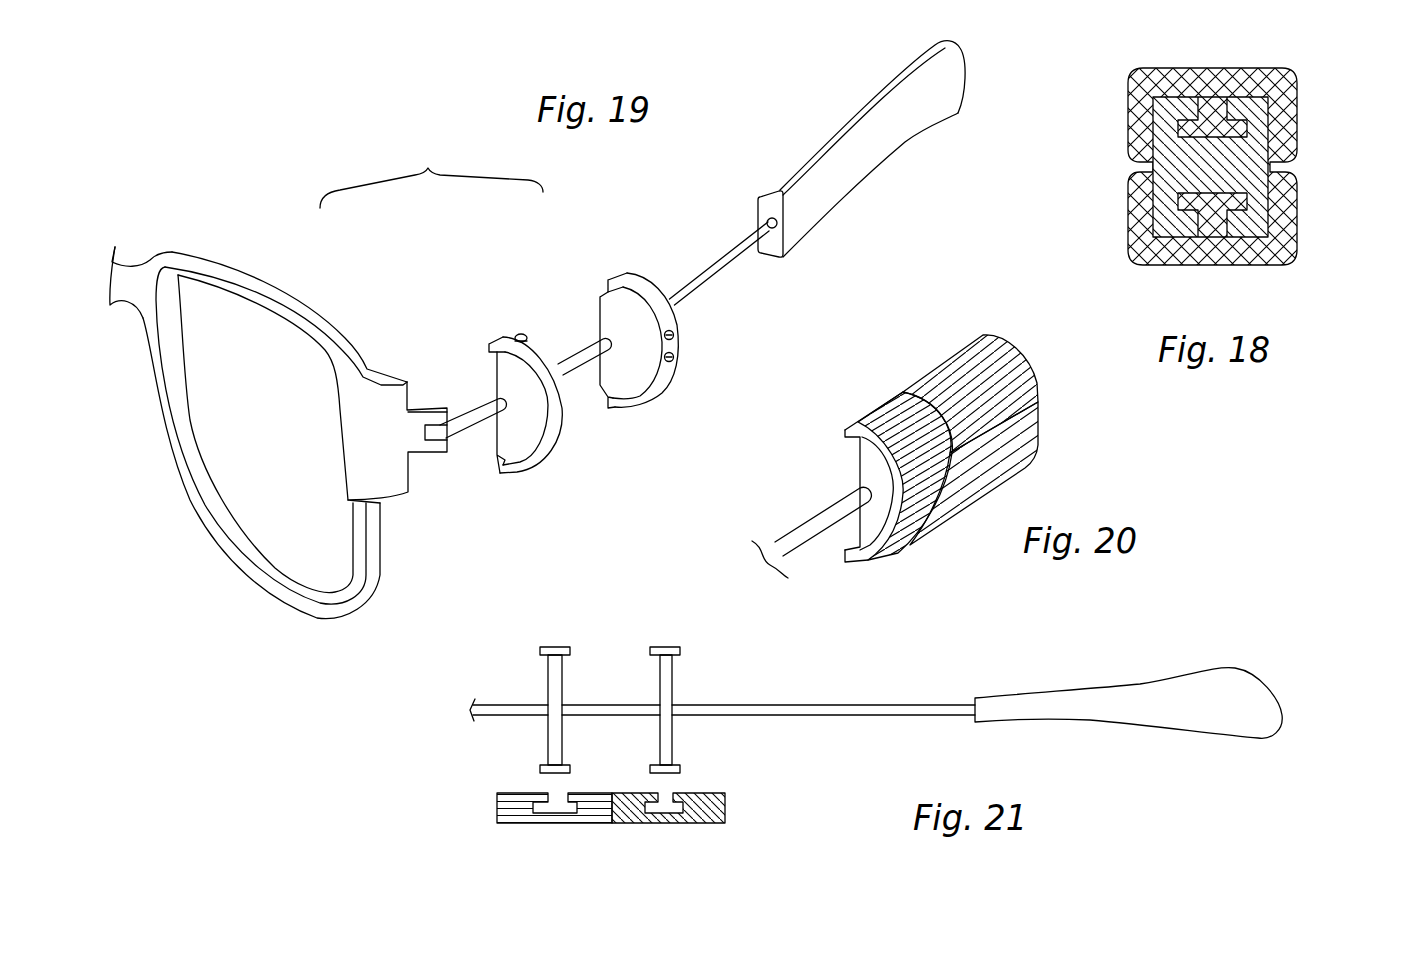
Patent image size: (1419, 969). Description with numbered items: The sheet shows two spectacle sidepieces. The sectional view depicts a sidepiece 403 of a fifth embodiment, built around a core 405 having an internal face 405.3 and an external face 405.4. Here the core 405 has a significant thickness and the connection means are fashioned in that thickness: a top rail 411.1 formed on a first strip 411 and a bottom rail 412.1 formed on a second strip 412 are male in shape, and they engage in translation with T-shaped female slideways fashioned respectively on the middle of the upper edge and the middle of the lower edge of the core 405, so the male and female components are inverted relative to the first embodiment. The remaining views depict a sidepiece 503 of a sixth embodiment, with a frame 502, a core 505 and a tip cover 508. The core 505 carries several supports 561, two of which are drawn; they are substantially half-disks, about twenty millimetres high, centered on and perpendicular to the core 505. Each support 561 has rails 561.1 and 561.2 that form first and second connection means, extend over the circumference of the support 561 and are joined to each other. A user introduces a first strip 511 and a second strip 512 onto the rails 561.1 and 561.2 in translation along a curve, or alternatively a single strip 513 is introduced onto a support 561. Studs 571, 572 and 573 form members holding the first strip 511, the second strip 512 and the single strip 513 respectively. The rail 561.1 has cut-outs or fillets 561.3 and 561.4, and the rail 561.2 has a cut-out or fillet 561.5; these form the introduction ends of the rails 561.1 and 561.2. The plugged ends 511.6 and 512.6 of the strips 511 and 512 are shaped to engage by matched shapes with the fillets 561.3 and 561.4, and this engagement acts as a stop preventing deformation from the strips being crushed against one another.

In FIG. 18, the sidepiece 403 is at (1297, 285).
In FIG. 18, the core 405 is at (1213, 170).
In FIG. 18, the internal face 405.3 is at (1140, 205).
In FIG. 18, the external face 405.4 is at (1289, 112).
In FIG. 18, the first strip 411 is at (1193, 87).
In FIG. 18, the top rail 411.1 is at (1178, 152).
In FIG. 18, the second strip 412 is at (1192, 265).
In FIG. 18, the bottom rail 412.1 is at (1240, 187).
In FIG. 19, the frame 502 is at (248, 288).
In FIG. 19, the sidepiece 503 is at (431, 172).
In FIG. 19, the core 505 is at (695, 288).
In FIG. 20, the core 505 is at (778, 545).
In FIG. 21, the core 505 is at (842, 704).
In FIG. 19, the tip cover 508 is at (820, 165).
In FIG. 21, the tip cover 508 is at (1122, 700).
In FIG. 20, the first strip 511 is at (963, 385).
In FIG. 21, the first strip 511 is at (712, 812).
In FIG. 20, the plugged end 511.6 is at (1012, 322).
In FIG. 20, the second strip 512 is at (1008, 455).
In FIG. 20, the plugged end 512.6 is at (1045, 452).
In FIG. 20, the single strip 513 is at (897, 430).
In FIG. 21, the single strip 513 is at (510, 812).
In FIG. 19, the support 561 is at (508, 380).
In FIG. 20, the support 561 is at (872, 465).
In FIG. 21, the support 561 is at (667, 687).
In FIG. 19, the rail 561.1 is at (620, 278).
In FIG. 21, the rail 561.1 is at (668, 648).
In FIG. 19, the rail 561.2 is at (609, 412).
In FIG. 21, the rail 561.2 is at (668, 768).
In FIG. 19, the cut-out or fillet 561.3 is at (595, 286).
In FIG. 19, the cut-out or fillet 561.4 is at (600, 398).
In FIG. 19, the cut-out or fillet 561.5 is at (490, 462).
In FIG. 19, the stud 571 is at (674, 335).
In FIG. 19, the stud 572 is at (674, 357).
In FIG. 19, the stud 573 is at (515, 333).